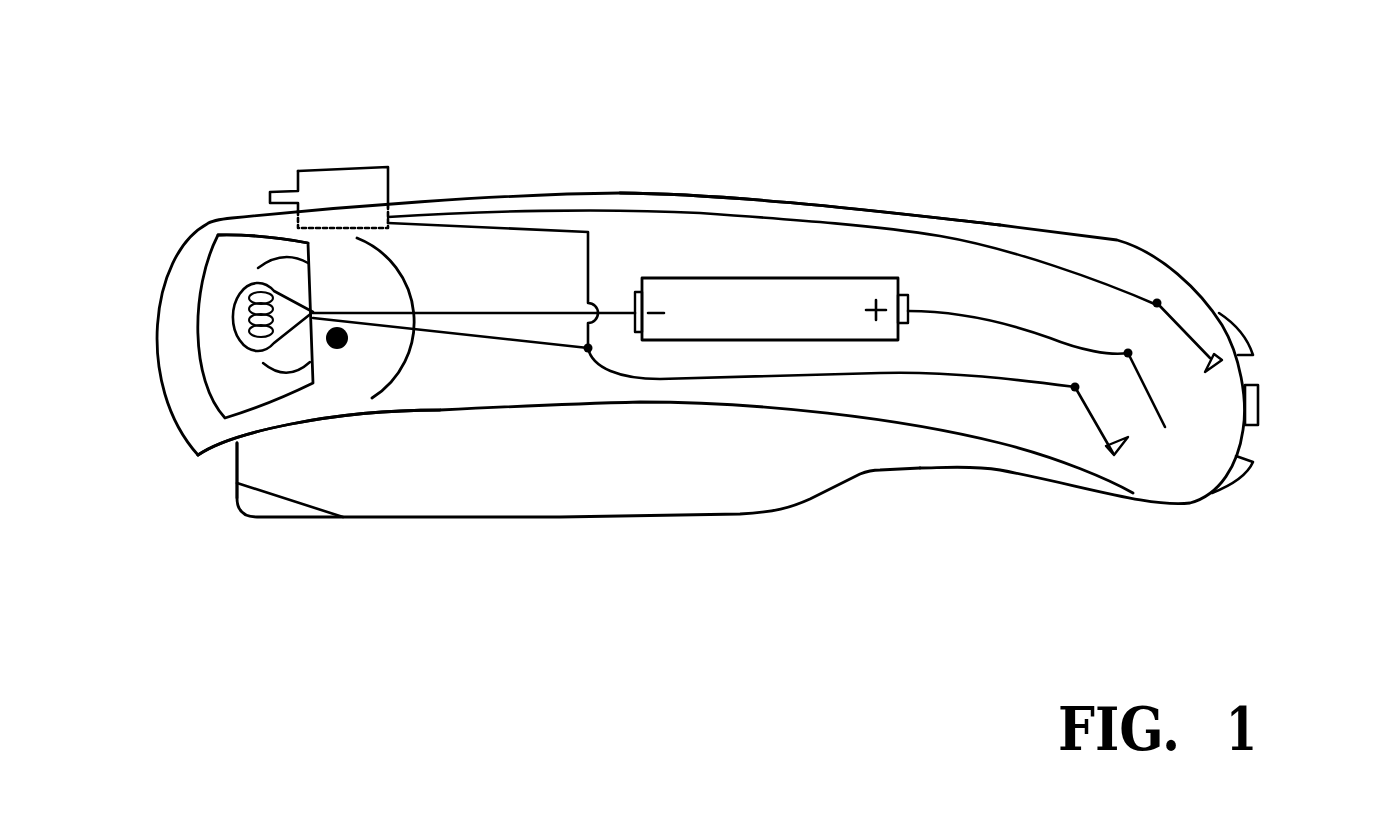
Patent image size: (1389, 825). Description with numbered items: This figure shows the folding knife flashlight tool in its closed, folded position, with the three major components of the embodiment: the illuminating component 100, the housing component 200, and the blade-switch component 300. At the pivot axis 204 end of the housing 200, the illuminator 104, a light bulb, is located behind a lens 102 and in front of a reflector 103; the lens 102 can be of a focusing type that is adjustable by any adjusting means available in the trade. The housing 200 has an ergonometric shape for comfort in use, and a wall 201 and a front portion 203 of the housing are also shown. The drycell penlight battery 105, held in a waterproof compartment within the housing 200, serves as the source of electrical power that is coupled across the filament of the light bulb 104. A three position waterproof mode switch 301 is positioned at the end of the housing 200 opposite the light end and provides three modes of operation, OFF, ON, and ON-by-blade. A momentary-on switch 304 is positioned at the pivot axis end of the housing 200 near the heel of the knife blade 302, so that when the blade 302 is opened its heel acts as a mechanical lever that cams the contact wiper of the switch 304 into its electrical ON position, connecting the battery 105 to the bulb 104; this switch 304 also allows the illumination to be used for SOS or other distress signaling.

The illuminating component 100 is at (222, 348).
The lens 102 is at (196, 398).
The reflector 103 is at (418, 382).
The illuminator 104 is at (246, 286).
The battery 105 is at (798, 278).
The housing component 200 is at (912, 200).
The housing wall 201 is at (700, 243).
The front housing portion 203 is at (222, 478).
The pivot axis 204 is at (339, 349).
The blade-switch component 300 is at (1134, 494).
The three position waterproof mode switch 301 is at (1295, 392).
The blade 302 is at (768, 469).
The momentary-on switch 304 is at (349, 138).